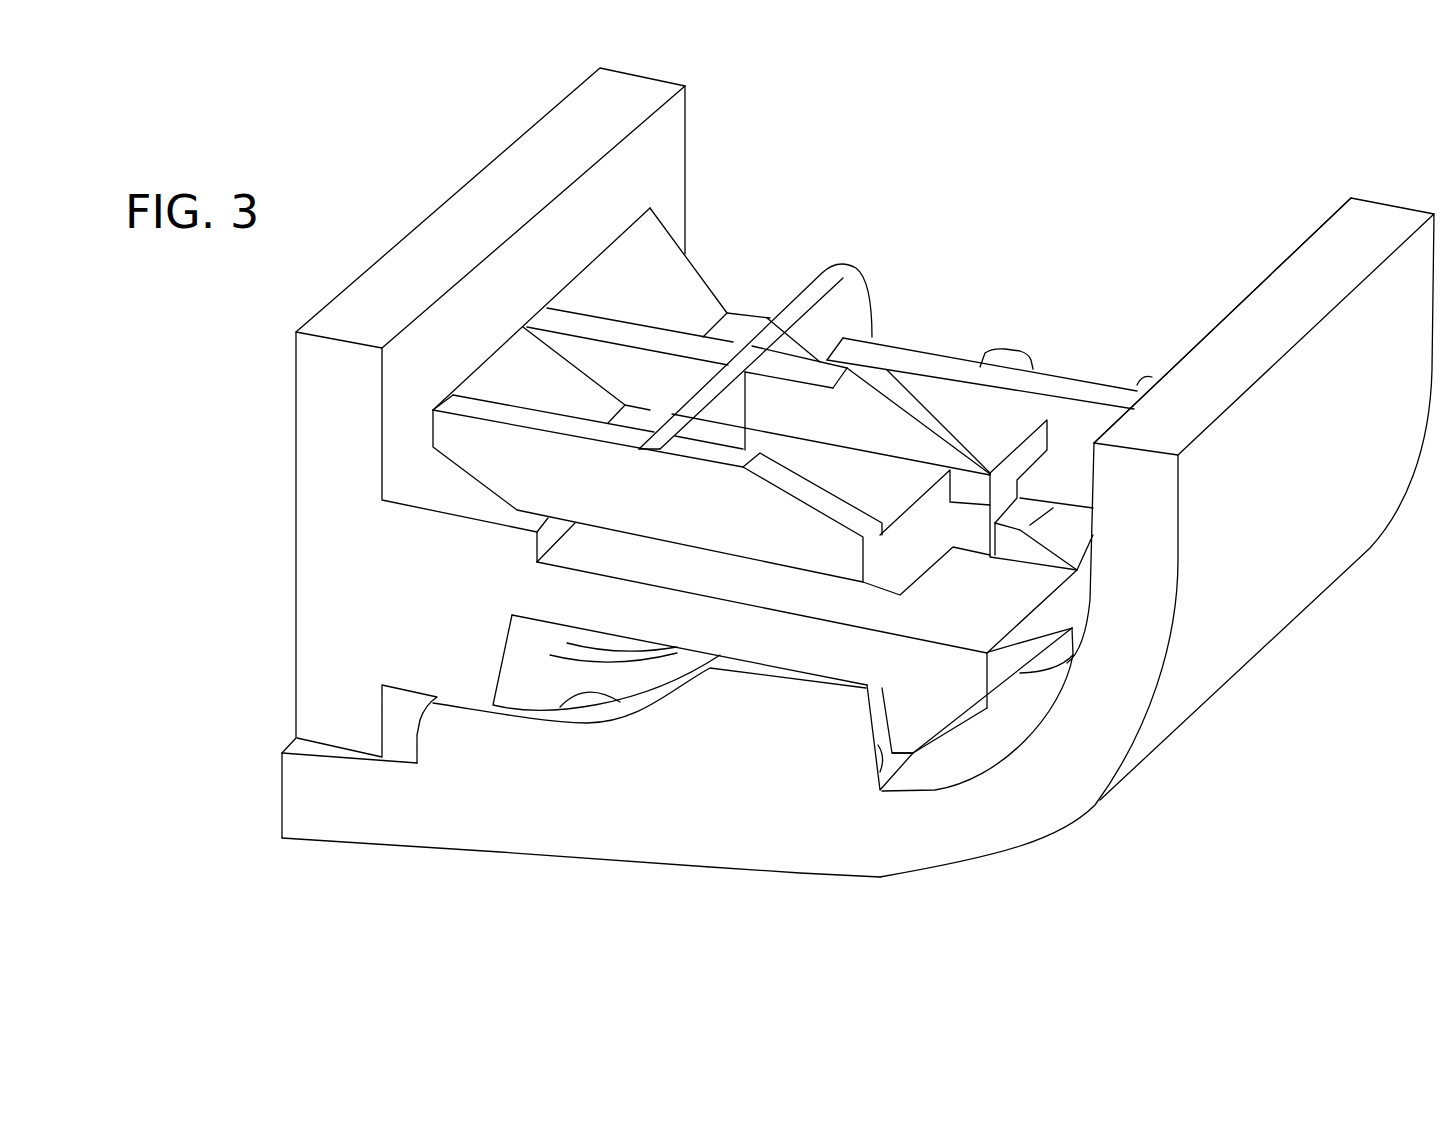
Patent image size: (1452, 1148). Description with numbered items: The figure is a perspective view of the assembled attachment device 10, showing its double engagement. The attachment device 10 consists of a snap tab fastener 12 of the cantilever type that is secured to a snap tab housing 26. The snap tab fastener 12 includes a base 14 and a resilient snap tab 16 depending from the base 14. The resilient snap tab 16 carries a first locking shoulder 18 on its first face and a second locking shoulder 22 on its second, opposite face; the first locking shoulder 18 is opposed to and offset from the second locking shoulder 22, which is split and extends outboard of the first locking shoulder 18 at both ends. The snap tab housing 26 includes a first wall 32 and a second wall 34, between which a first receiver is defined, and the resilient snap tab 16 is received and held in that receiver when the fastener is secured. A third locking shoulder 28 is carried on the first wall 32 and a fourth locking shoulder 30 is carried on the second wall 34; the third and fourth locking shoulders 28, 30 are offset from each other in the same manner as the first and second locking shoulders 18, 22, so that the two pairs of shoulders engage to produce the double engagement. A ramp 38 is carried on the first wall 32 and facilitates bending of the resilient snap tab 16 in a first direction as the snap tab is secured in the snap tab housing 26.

The attachment device 10 is at (433, 128).
The snap tab fastener 12 is at (824, 192).
The base 14 is at (333, 420).
The resilient snap tab 16 is at (620, 613).
The first locking shoulder 18 is at (900, 752).
The second locking shoulder 22 is at (1020, 548).
The snap tab housing 26 is at (1080, 838).
The third locking shoulder 28 is at (910, 727).
The fourth locking shoulder 30 is at (1005, 494).
The first wall 32 is at (640, 833).
The second wall 34 is at (863, 428).
The ramp 38 is at (577, 630).